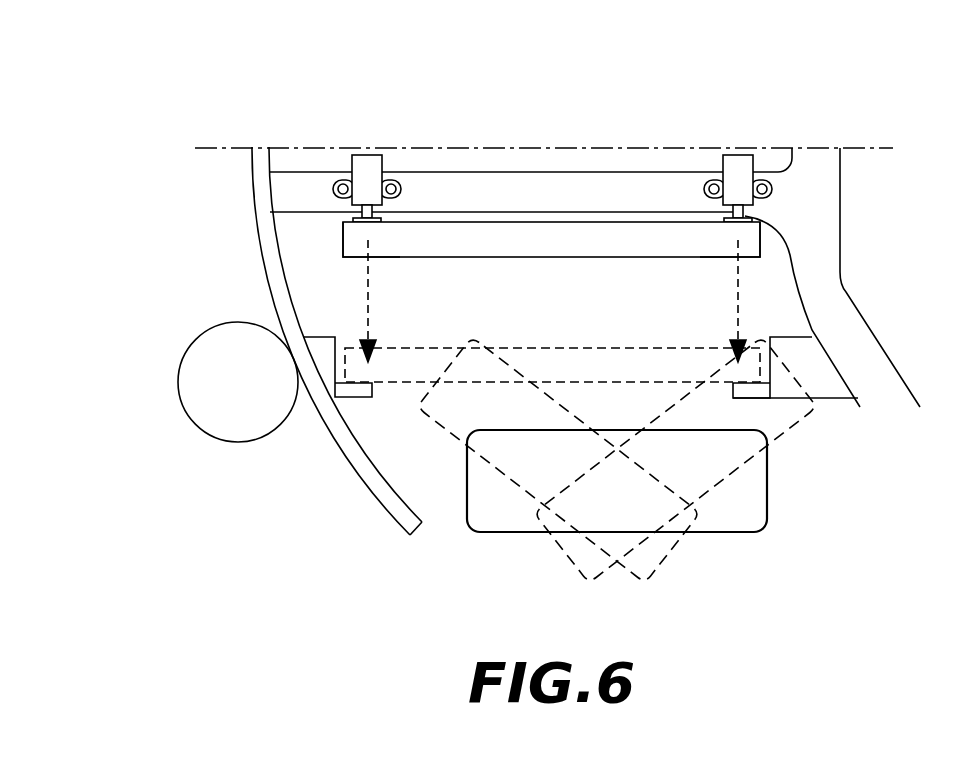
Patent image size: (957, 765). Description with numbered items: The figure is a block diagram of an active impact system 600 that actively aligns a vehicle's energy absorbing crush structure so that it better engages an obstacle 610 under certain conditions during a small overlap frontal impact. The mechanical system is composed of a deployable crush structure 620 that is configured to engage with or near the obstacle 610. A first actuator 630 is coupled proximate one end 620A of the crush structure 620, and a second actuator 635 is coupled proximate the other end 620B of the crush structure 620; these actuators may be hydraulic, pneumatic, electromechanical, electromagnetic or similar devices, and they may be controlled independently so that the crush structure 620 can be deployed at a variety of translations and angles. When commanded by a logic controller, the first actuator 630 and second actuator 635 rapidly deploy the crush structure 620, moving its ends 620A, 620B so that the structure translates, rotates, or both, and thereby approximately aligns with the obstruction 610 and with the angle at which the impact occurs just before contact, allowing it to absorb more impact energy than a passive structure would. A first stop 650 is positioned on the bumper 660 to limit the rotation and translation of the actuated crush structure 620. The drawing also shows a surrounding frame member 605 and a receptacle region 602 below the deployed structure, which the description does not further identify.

The active impact system 600 is at (137, 83).
The receptacle 602 is at (738, 509).
The frame member 605 is at (763, 308).
The obstacle 610 is at (208, 373).
The crush structure 620 is at (595, 242).
The one end of the crush structure 620A is at (353, 242).
The other end of the crush structure 620B is at (750, 240).
The first actuator 630 is at (368, 168).
The second actuator 635 is at (740, 168).
The first stop 650 is at (347, 390).
The bumper 660 is at (258, 200).